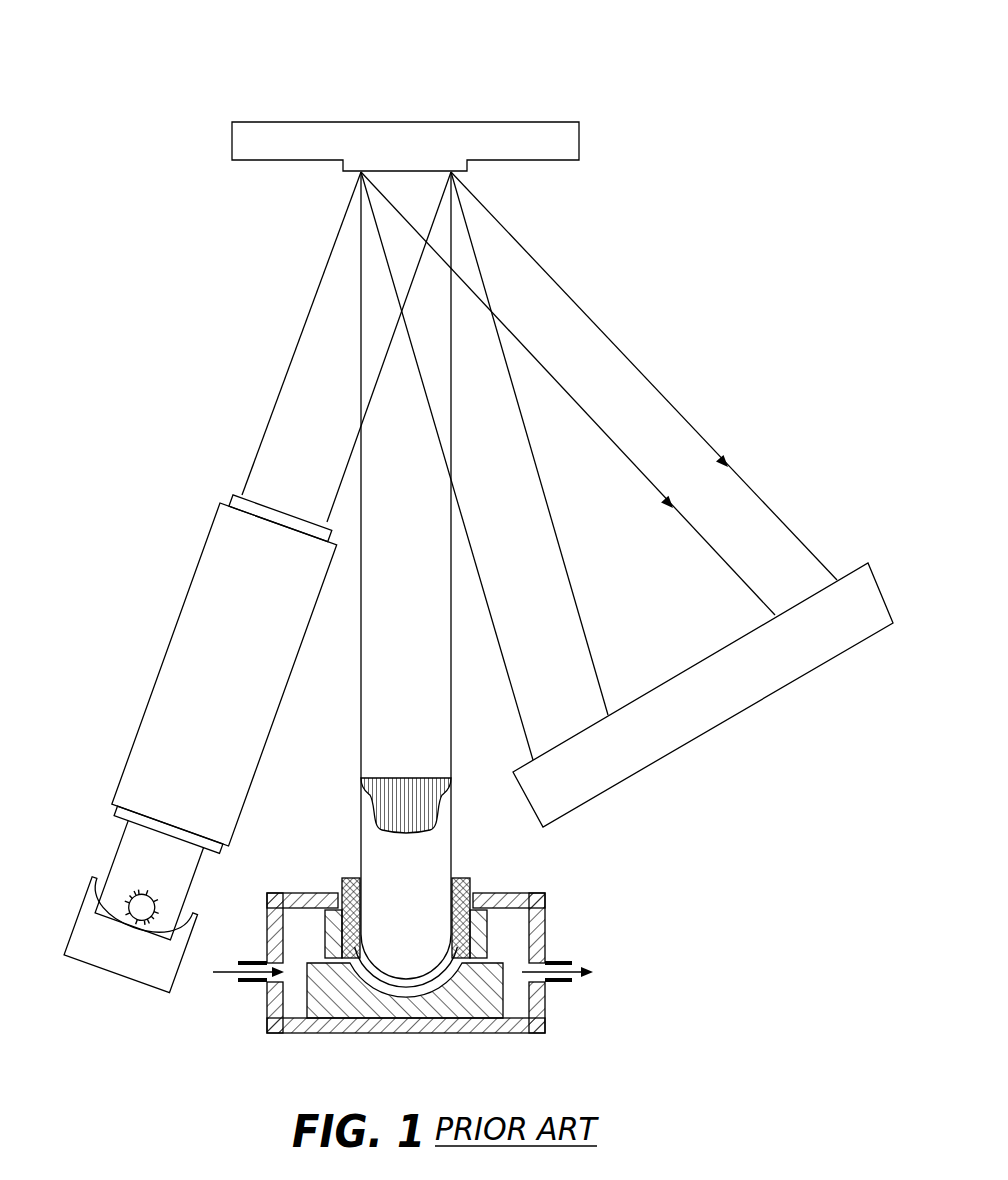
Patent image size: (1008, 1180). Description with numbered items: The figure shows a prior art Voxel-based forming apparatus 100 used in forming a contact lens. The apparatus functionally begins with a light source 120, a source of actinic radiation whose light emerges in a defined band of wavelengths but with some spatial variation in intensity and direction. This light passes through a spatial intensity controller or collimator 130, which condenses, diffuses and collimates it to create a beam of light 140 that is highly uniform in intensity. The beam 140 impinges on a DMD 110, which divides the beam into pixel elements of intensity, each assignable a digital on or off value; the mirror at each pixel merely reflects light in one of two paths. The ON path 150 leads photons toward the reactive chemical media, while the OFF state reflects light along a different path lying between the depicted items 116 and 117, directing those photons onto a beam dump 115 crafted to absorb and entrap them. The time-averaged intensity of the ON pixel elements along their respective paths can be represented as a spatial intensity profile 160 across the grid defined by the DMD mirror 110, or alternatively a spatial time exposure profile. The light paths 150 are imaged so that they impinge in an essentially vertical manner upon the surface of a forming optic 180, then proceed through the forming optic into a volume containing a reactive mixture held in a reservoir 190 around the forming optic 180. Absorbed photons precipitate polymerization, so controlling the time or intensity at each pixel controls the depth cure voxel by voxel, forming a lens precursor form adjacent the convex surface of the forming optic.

The forming apparatus 100 is at (150, 115).
The DMD 110 is at (413, 142).
The beam dump 115 is at (705, 705).
The OFF path boundary 116 is at (572, 583).
The OFF path boundary 117 is at (668, 400).
The light source 120 is at (117, 875).
The spatial intensity controller 130 is at (208, 660).
The beam of light 140 is at (298, 400).
The ON path 150 is at (385, 680).
The spatial intensity profile 160 is at (407, 807).
The forming optic 180 is at (440, 963).
The reservoir 190 is at (307, 995).